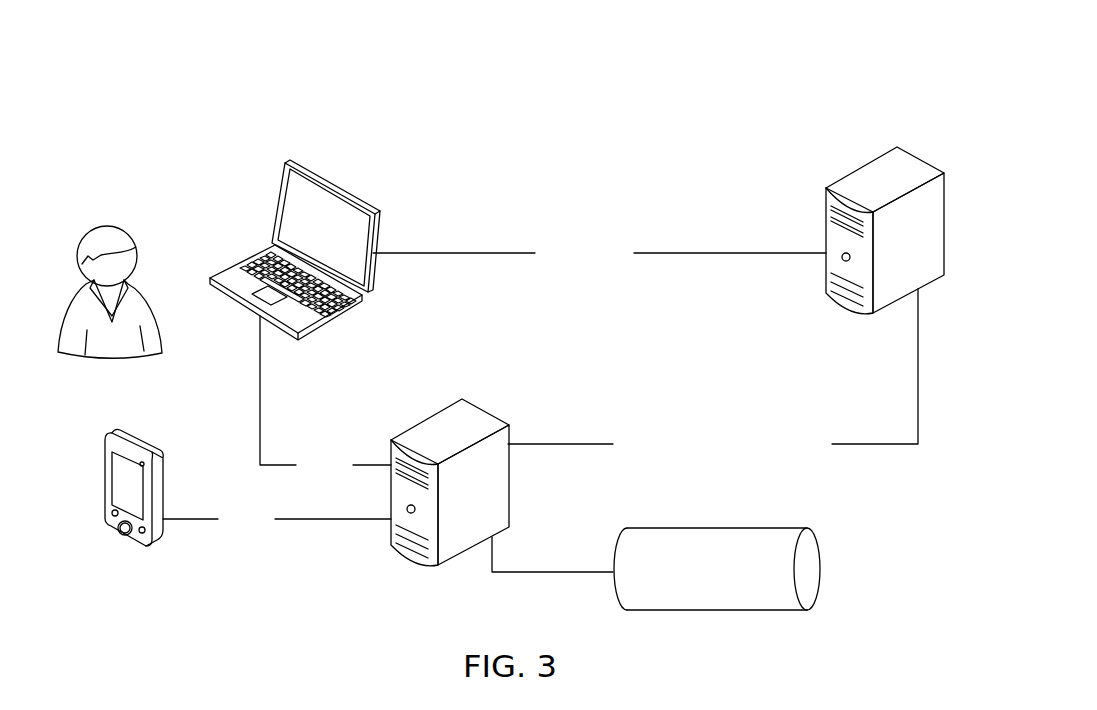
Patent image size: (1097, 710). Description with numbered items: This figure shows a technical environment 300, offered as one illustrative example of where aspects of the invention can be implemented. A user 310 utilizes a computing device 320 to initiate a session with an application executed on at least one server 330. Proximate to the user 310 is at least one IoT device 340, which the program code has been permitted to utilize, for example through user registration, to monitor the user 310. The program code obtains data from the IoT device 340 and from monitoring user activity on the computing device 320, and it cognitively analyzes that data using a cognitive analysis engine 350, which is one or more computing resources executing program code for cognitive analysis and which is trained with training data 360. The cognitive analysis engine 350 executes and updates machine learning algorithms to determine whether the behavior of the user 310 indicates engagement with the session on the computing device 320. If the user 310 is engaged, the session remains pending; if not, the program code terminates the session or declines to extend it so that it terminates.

The technical environment 300 is at (946, 93).
The user 310 is at (108, 227).
The computing device 320 is at (339, 191).
The server 330 is at (828, 187).
The IoT device 340 is at (157, 541).
The cognitive analysis engine 350 is at (472, 399).
The training data 360 is at (728, 598).